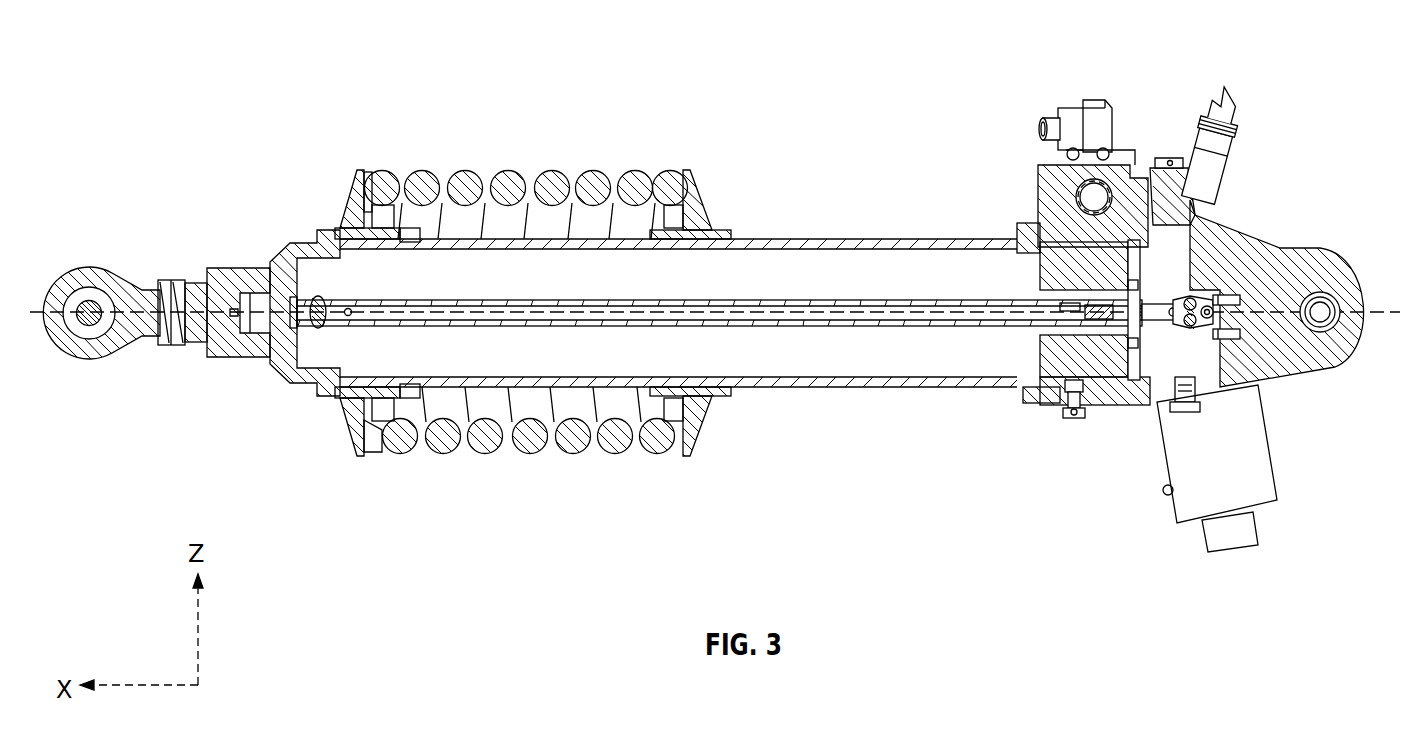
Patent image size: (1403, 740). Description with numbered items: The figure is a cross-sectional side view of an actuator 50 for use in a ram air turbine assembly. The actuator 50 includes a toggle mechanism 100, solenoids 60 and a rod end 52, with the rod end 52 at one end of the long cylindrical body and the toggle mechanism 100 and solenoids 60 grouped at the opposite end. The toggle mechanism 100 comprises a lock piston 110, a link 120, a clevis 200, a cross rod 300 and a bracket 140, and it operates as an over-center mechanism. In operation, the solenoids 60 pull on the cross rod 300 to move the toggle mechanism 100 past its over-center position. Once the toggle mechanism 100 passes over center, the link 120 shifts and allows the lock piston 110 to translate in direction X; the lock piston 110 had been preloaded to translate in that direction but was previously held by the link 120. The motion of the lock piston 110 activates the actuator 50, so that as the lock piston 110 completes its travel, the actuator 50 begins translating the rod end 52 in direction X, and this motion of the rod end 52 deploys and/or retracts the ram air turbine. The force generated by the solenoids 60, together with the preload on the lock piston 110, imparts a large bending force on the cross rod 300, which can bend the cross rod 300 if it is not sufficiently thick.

The actuator 50 is at (384, 55).
The rod end 52 is at (92, 283).
The solenoids 60 is at (1188, 502).
The toggle mechanism 100 is at (1157, 351).
The lock piston 110 is at (1076, 386).
The link 120 is at (1208, 383).
The bracket 140 is at (1222, 290).
The clevis 200 is at (1258, 385).
The cross rod 300 is at (1193, 293).